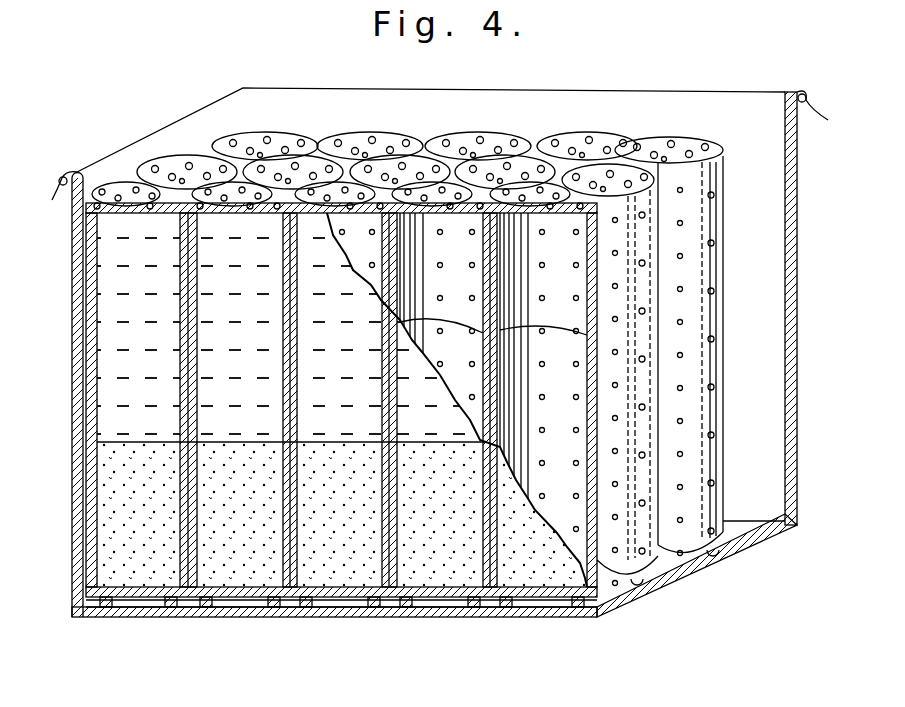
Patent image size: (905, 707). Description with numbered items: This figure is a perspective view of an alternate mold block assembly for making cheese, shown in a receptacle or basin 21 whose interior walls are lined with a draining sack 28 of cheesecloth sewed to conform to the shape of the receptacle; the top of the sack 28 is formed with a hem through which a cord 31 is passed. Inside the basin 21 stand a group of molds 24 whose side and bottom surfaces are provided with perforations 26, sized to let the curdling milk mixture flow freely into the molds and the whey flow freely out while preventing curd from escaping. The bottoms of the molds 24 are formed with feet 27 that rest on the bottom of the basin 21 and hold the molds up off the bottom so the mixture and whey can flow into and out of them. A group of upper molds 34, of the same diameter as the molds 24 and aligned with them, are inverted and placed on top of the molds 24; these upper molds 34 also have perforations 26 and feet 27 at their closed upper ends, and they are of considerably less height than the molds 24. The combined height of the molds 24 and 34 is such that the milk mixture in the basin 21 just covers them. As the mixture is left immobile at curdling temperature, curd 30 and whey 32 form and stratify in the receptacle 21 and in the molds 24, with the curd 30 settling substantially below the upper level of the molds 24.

The receptacle or basin 21 is at (797, 473).
The molds 24 is at (95, 394).
The perforations 26 is at (363, 152).
The feet 27 is at (97, 200).
The draining sack 28 is at (74, 168).
The curd 30 is at (110, 495).
The cord 31 is at (61, 190).
The whey 32 is at (112, 297).
The upper molds 34 is at (165, 165).